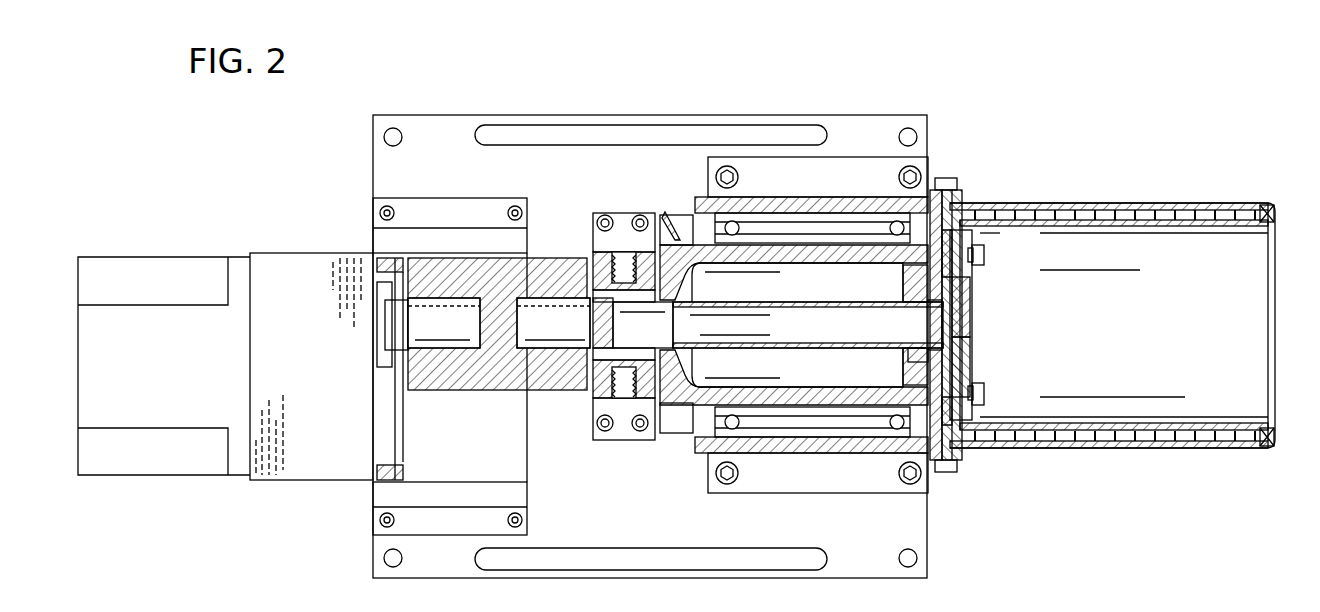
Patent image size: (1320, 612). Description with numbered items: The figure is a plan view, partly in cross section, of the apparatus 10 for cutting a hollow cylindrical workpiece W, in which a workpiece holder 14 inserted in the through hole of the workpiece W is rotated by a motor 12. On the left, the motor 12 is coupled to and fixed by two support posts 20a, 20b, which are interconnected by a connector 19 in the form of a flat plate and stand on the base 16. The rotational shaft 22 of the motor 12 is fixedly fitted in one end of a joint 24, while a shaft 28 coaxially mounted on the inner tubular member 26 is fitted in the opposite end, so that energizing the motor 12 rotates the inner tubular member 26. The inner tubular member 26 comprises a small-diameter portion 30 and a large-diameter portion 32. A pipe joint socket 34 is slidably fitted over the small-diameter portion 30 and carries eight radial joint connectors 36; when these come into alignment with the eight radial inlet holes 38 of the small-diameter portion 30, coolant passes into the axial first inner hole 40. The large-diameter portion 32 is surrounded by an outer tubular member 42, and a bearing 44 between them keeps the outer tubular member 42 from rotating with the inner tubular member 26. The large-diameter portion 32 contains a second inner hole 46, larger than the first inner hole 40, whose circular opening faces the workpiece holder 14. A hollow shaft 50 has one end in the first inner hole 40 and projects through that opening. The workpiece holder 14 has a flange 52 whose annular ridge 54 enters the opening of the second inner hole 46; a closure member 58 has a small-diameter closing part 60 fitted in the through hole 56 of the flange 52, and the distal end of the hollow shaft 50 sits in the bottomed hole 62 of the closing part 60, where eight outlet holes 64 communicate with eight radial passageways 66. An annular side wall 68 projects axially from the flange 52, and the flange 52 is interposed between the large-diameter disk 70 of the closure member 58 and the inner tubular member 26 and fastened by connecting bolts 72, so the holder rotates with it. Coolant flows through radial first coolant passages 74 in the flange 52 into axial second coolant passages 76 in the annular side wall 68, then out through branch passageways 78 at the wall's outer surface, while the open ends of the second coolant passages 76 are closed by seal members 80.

The apparatus 10 is at (250, 131).
The motor 12 is at (127, 323).
The workpiece holder 14 is at (1070, 135).
The base 16 is at (903, 530).
The connector 19 is at (445, 525).
The support post 20a is at (513, 493).
The support post 20b is at (470, 243).
The rotational shaft 22 is at (452, 335).
The joint 24 is at (480, 377).
The inner tubular member 26 is at (677, 178).
The shaft 28 is at (567, 310).
The small-diameter portion 30 is at (652, 268).
The large-diameter portion 32 is at (698, 213).
The pipe joint socket 34 is at (650, 395).
The joint connectors 36 is at (605, 272).
The inlet holes 38 is at (613, 318).
The first inner hole 40 is at (665, 345).
The outer tubular member 42 is at (847, 198).
The bearing 44 is at (893, 210).
The second inner hole 46 is at (823, 268).
The hollow shaft 50 is at (815, 340).
The flange 52 is at (988, 200).
The annular ridge 54 is at (965, 195).
The through hole 56 is at (918, 362).
The closure member 58 is at (1030, 335).
The small-diameter closing part 60 is at (968, 365).
The bottomed hole 62 is at (968, 315).
The outlet holes 64 is at (943, 313).
The passageways 66 is at (922, 287).
The annular side wall 68 is at (1047, 200).
The large-diameter disk 70 is at (968, 335).
The connecting bolts 72 is at (983, 255).
The first coolant passages 74 is at (968, 275).
The second coolant passages 76 is at (1233, 223).
The branch passageways 78 is at (1243, 207).
The seal members 80 is at (1275, 213).
The hollow cylindrical workpiece W is at (1100, 450).